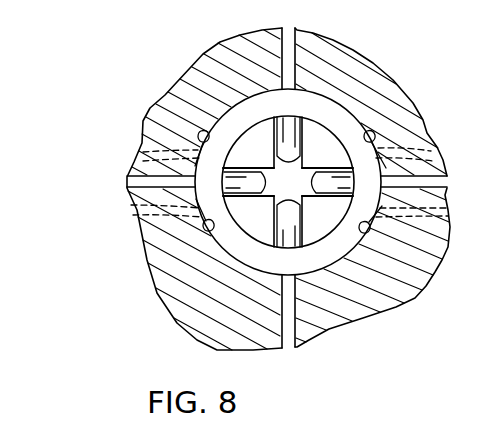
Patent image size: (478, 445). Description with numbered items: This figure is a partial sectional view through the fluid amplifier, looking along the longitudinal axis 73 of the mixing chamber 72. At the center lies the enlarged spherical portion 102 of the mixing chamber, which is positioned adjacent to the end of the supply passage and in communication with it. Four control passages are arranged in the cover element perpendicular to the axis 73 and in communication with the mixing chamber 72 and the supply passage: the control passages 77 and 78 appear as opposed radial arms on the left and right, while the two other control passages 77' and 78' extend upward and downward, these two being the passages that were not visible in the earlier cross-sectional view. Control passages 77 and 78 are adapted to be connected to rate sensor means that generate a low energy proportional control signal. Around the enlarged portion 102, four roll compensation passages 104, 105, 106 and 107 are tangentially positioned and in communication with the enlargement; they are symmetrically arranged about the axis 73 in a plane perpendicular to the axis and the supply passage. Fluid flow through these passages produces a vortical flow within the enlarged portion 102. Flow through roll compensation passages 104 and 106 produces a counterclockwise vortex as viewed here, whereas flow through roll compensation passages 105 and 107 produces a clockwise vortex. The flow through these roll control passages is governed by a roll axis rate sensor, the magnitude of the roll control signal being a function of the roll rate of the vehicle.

The enlarged spherical portion 102 is at (231, 105).
The control passage 77 is at (141, 176).
The control passage 77' is at (308, 58).
The control passage 78 is at (426, 172).
The control passage 78' is at (308, 311).
The mixing chamber 72 is at (293, 117).
The longitudinal axis 73 is at (289, 178).
The roll compensation passage 104 is at (373, 135).
The roll compensation passage 105 is at (370, 228).
The roll compensation passage 106 is at (207, 227).
The roll compensation passage 107 is at (202, 135).